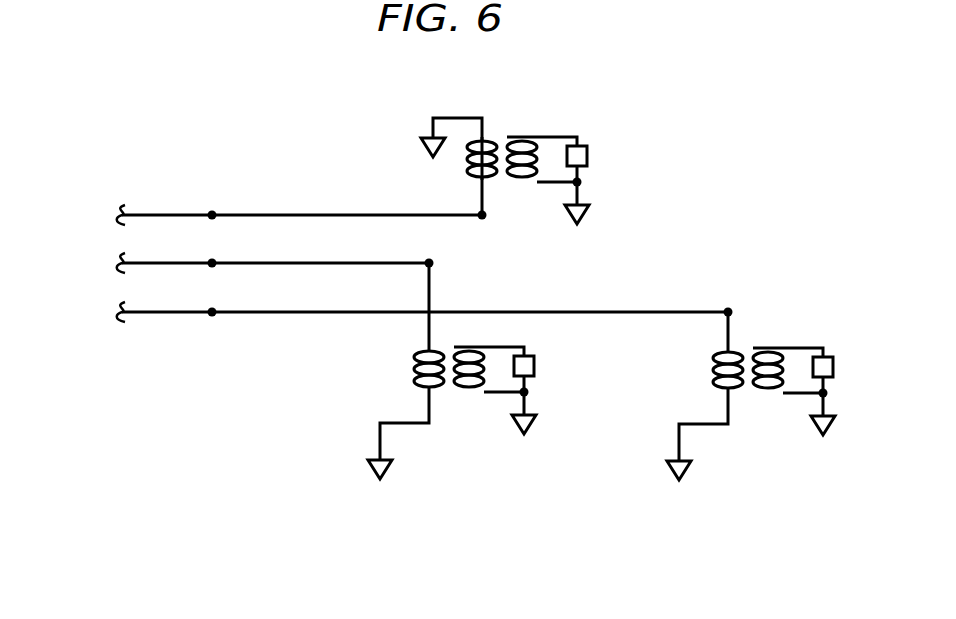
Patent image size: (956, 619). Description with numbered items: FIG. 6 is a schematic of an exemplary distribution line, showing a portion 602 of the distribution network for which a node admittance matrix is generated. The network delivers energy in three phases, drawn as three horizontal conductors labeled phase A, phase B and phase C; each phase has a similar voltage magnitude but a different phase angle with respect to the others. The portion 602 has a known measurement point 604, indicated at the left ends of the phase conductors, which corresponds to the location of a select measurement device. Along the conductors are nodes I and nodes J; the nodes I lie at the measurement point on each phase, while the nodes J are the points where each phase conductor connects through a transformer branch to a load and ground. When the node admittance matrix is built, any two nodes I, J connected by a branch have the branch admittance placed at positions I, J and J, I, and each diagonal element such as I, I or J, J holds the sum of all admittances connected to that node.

The portion of the distribution network 602 is at (336, 146).
The known measurement point 604 is at (155, 326).
The phase A is at (188, 312).
The phase B is at (188, 263).
The phase C is at (188, 215).
The node I is at (217, 303).
The node J is at (580, 264).